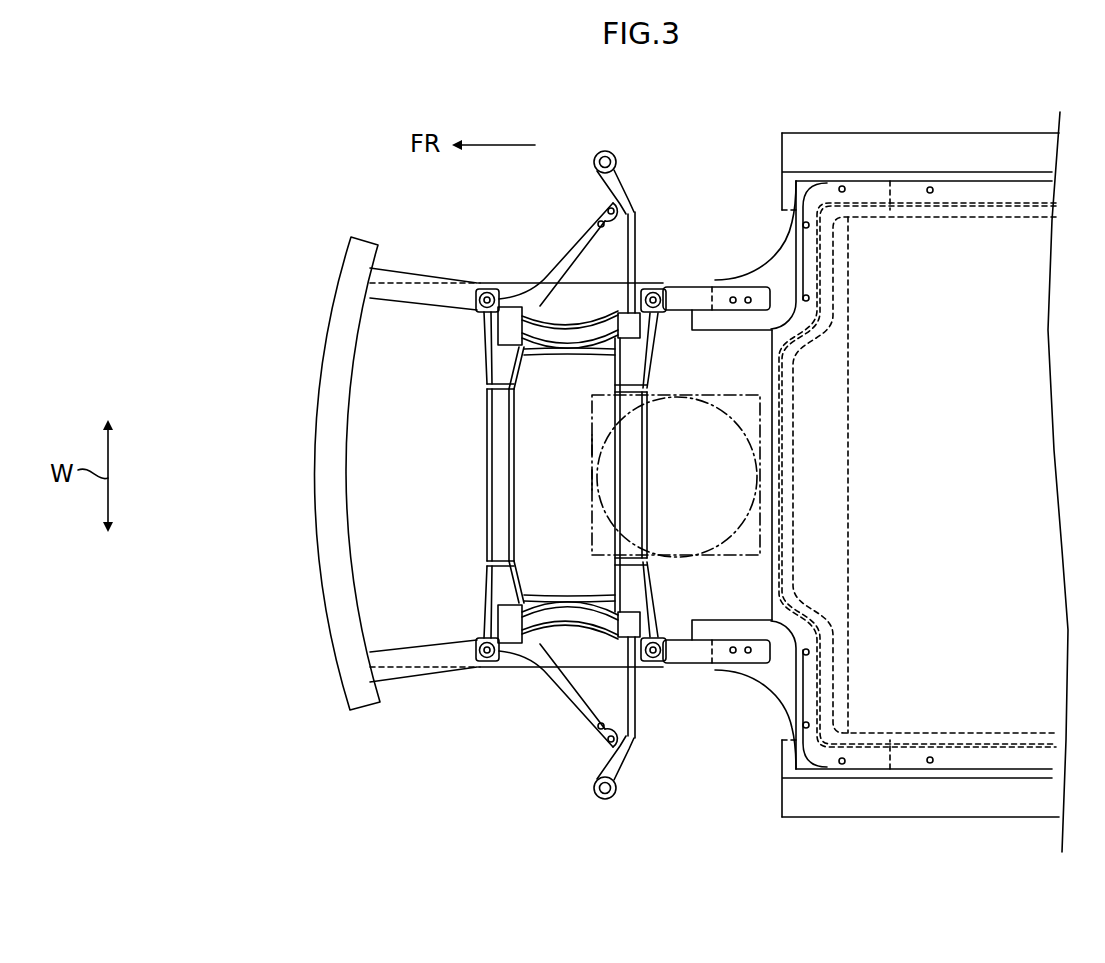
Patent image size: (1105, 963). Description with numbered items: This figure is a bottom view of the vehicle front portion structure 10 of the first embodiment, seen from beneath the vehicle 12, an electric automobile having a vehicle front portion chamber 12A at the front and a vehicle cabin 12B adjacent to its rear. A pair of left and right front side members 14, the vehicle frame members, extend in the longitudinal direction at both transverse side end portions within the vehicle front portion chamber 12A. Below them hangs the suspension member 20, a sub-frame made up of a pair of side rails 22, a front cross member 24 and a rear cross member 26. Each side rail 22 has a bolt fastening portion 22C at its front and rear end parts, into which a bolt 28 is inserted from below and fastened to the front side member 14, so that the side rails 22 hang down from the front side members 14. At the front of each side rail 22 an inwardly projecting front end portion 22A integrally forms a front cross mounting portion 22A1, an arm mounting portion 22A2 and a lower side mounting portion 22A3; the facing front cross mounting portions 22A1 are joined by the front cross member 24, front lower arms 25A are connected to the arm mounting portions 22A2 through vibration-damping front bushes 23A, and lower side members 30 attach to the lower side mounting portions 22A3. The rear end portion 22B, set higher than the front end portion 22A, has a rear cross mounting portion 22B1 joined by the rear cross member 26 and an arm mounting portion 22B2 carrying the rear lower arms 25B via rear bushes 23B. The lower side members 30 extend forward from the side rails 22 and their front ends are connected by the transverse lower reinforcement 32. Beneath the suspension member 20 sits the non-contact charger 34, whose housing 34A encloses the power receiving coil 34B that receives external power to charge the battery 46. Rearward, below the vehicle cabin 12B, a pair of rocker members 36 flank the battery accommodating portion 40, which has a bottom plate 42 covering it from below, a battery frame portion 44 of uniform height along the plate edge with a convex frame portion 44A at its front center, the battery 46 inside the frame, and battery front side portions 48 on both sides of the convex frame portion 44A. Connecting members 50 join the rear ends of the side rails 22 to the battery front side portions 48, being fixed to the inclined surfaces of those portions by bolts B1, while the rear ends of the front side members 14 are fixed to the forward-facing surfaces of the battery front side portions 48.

The vehicle front structure 10 is at (265, 108).
The vehicle 12 is at (1043, 97).
The vehicle front portion chamber 12A is at (670, 105).
The vehicle cabin 12B is at (970, 110).
The front side member 14 is at (513, 282).
The suspension member 20 is at (585, 310).
The side rail 22 is at (562, 325).
The front end portion 22A is at (455, 340).
The front cross mounting portion 22A1 is at (487, 410).
The arm mounting portion 22A2 is at (484, 337).
The lower side mounting portion 22A3 is at (483, 334).
The rear end portion 22B is at (667, 340).
The rear cross mounting portion 22B1 is at (615, 410).
The arm mounting portion 22B2 is at (602, 356).
The bolt fastening portion 22C is at (482, 288).
The front bush 23A is at (487, 392).
The rear bush 23B is at (617, 245).
The front cross member 24 is at (487, 462).
The front lower arm 25A is at (540, 282).
The rear lower arm 25B is at (625, 207).
The rear cross member 26 is at (642, 463).
The bolt 28 is at (482, 288).
The lower side member 30 is at (398, 270).
The lower reinforcement 32 is at (317, 425).
The non-contact charger 34 is at (588, 492).
The housing 34A is at (593, 477).
The power receiving coil 34B is at (593, 445).
The rocker member 36 is at (920, 133).
The battery accommodating portion 40 is at (848, 118).
The bottom plate 42 is at (767, 447).
The battery frame portion 44 is at (910, 747).
The convex frame portion 44A is at (787, 363).
The battery 46 is at (800, 748).
The battery front side portion 48 is at (760, 248).
The connecting member 50 is at (708, 285).
The bolt B1 is at (748, 304).